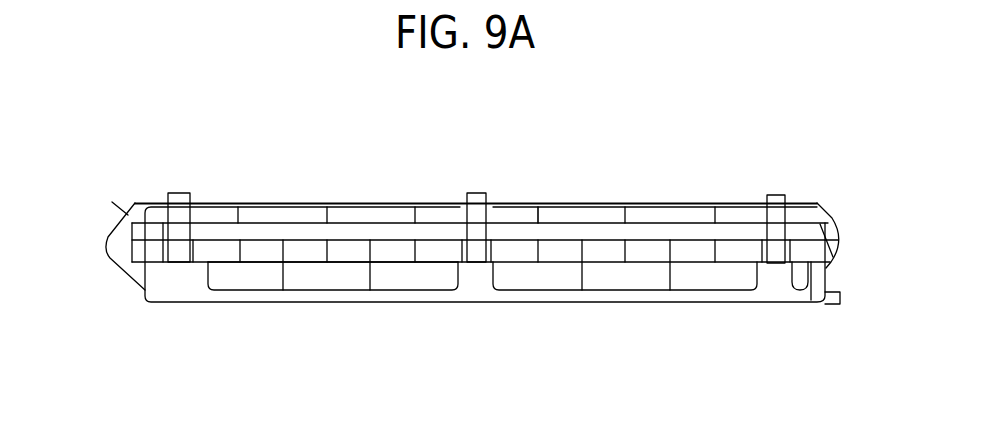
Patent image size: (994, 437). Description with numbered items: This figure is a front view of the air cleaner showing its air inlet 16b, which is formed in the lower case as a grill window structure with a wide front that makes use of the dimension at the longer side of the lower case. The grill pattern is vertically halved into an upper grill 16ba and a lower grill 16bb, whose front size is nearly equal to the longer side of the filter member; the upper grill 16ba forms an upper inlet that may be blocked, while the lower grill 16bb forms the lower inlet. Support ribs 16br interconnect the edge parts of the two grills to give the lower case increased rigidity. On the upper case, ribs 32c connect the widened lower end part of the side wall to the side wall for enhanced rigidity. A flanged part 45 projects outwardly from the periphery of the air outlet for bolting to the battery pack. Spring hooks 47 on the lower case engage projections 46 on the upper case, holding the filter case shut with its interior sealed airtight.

The air inlet 16b is at (243, 355).
The upper grill 16ba is at (350, 253).
The lower grill 16bb is at (308, 274).
The support ribs 16br is at (540, 246).
The ribs 32c is at (541, 214).
The flanged part 45 is at (832, 308).
The projections 46 is at (115, 256).
The spring hooks 47 is at (110, 233).